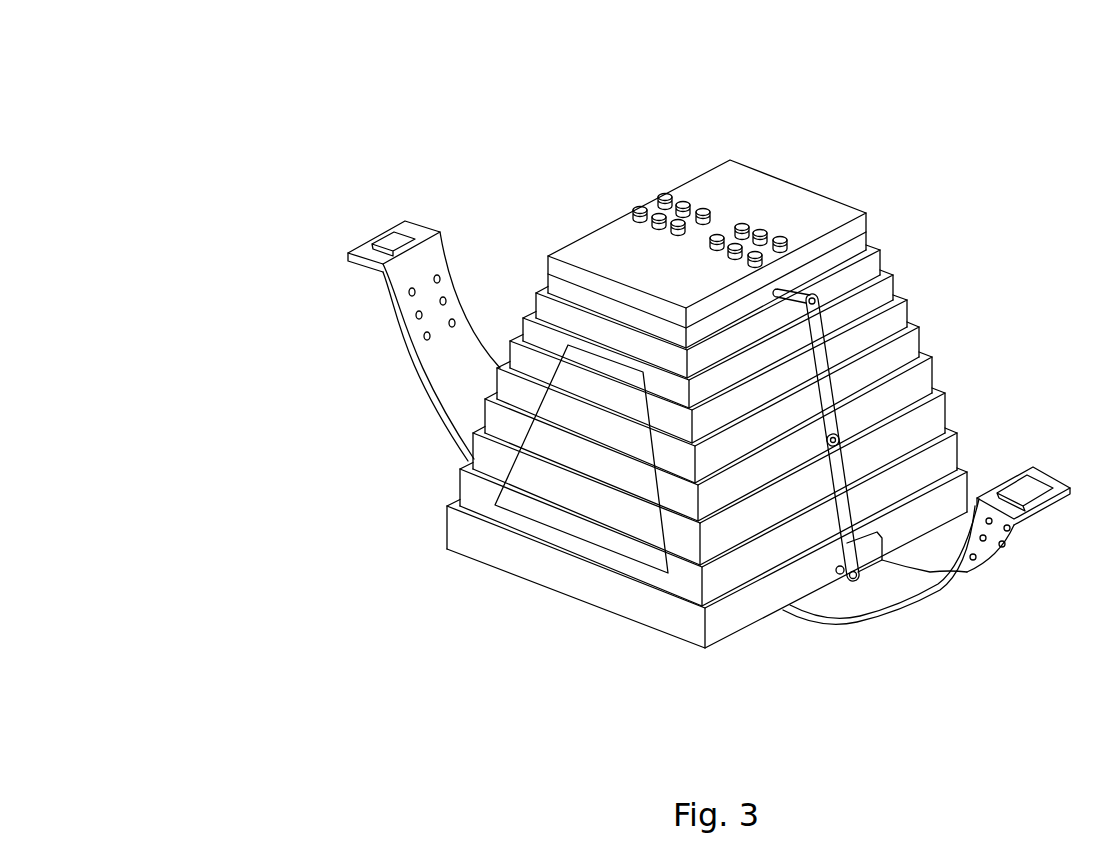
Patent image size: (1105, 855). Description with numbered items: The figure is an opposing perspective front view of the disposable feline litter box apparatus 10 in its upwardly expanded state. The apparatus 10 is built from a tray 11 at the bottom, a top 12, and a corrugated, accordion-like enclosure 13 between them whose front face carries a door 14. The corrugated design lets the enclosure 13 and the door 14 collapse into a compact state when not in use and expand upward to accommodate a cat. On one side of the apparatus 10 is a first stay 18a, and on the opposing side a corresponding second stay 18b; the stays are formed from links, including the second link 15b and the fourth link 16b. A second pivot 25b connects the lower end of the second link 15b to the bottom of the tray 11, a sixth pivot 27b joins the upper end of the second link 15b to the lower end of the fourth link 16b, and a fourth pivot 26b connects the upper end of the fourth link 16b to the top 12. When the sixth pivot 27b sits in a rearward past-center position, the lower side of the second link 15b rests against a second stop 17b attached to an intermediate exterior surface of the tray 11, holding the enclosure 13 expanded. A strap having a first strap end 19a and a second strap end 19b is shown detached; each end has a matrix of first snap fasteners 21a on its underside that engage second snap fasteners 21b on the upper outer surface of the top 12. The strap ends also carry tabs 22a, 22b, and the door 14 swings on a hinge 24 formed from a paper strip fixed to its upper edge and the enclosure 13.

The apparatus 10 is at (248, 118).
The tray 11 is at (692, 635).
The top 12 is at (779, 212).
The enclosure 13 is at (490, 457).
The door 14 is at (608, 537).
The second link 15b is at (945, 420).
The fourth link 16b is at (907, 322).
The second stop 17b is at (876, 550).
The first stay 18a is at (561, 179).
The second stay 18b is at (1018, 283).
The first strap end 19a is at (433, 232).
The second strap end 19b is at (957, 577).
The first snap fasteners 21a is at (427, 336).
The second snap fasteners 21b is at (742, 225).
The mounting tab 22a is at (387, 246).
The mounting tab 22b is at (1027, 492).
The hinge 24 is at (580, 343).
The second pivot 25b is at (849, 578).
The fourth pivot 26b is at (880, 266).
The sixth pivot 27b is at (932, 373).